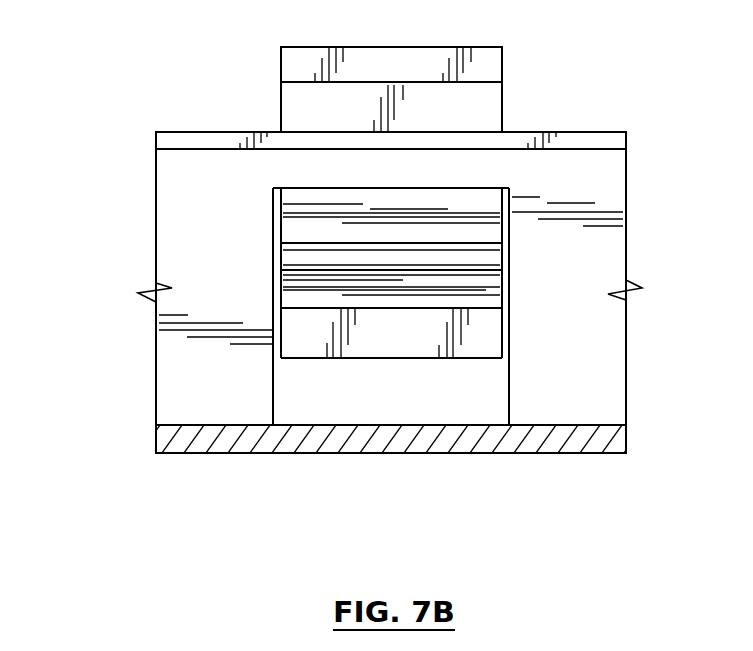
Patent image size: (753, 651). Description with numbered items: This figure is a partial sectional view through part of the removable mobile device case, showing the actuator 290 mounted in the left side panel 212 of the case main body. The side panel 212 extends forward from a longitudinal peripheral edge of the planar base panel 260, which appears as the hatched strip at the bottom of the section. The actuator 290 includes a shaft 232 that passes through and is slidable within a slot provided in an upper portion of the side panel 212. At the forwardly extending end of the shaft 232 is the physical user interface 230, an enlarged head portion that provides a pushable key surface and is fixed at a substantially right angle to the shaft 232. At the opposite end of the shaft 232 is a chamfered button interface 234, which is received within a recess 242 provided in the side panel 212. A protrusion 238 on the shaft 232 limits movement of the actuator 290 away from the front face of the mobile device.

The left side panel 212 is at (183, 193).
The physical user interface 230 is at (485, 62).
The shaft 232 is at (297, 227).
The actuator 290 is at (486, 206).
The protrusion 238 is at (492, 256).
The chamfered button interface 234 is at (490, 337).
The recess 242 is at (369, 397).
The base panel 260 is at (223, 453).